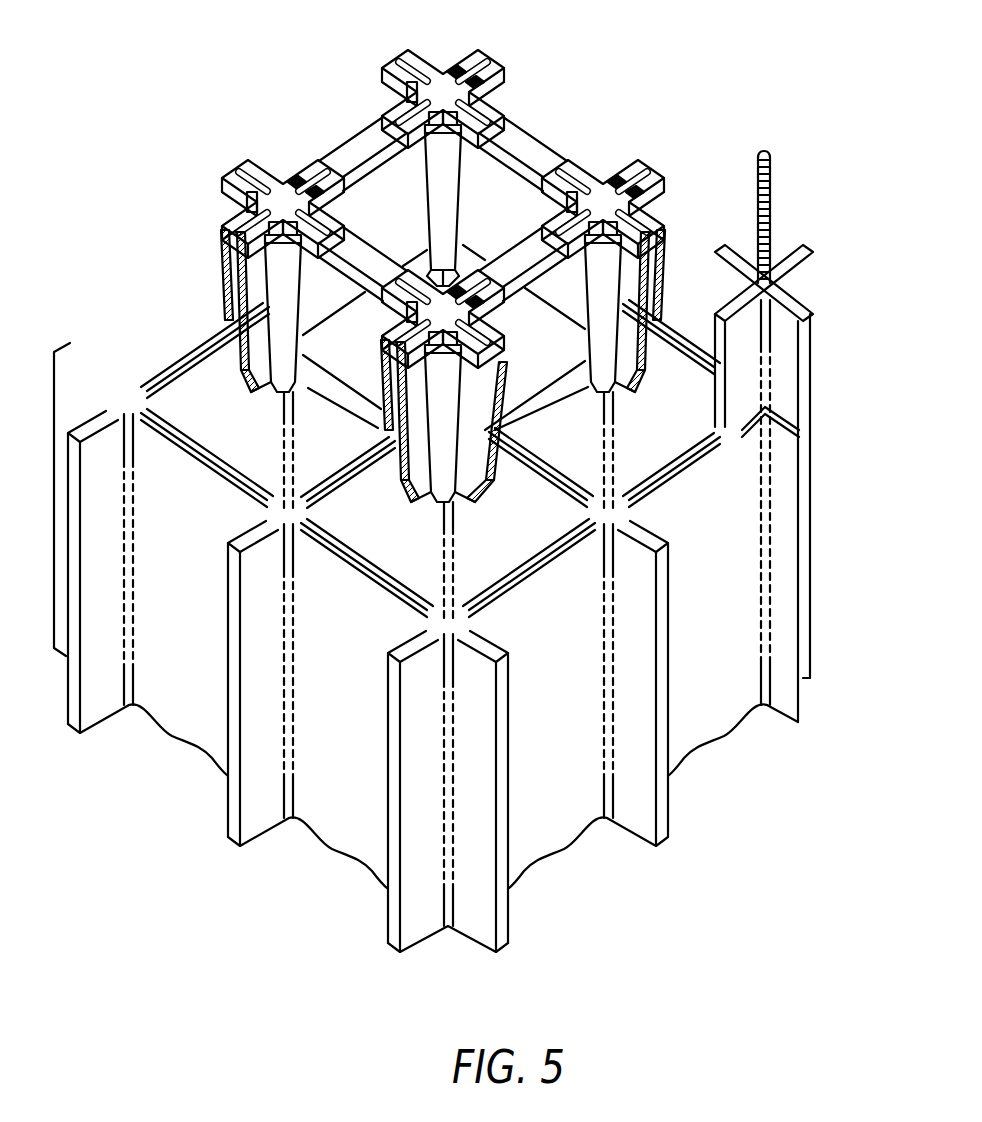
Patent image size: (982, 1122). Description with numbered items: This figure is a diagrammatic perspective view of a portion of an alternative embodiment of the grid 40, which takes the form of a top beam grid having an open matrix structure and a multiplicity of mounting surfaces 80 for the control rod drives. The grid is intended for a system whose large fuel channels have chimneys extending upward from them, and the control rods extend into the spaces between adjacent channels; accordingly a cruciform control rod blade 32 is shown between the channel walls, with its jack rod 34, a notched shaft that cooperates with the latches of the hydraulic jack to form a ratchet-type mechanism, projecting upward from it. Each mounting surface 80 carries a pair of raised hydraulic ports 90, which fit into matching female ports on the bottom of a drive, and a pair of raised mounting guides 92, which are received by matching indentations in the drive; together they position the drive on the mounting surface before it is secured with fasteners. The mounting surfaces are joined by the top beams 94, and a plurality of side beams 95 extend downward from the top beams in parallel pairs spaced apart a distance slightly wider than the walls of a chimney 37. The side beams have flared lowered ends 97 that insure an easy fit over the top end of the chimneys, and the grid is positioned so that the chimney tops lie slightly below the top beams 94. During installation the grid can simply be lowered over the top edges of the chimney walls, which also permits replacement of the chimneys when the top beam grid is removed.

The control rod blade 32 is at (797, 377).
The jack rod 34 is at (772, 225).
The chimney 37 is at (152, 360).
The grid 40 is at (357, 133).
The mounting surface 80 is at (440, 78).
The hydraulic port 90 is at (252, 208).
The mounting guide 92 is at (292, 178).
The top beam 94 is at (530, 146).
The side beam 95 is at (256, 286).
The flared lowered end 97 is at (418, 487).